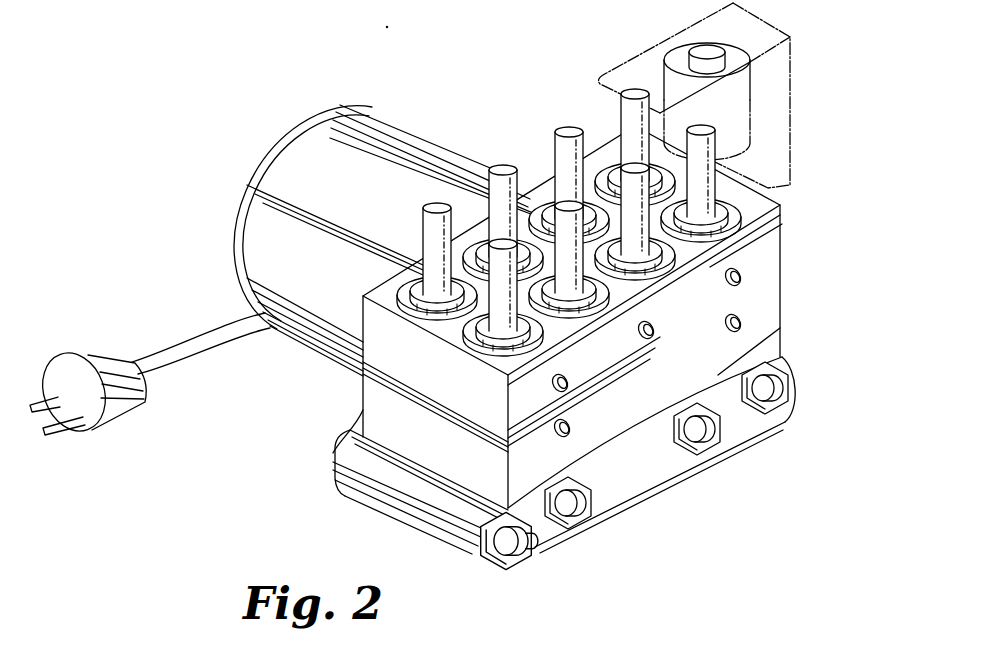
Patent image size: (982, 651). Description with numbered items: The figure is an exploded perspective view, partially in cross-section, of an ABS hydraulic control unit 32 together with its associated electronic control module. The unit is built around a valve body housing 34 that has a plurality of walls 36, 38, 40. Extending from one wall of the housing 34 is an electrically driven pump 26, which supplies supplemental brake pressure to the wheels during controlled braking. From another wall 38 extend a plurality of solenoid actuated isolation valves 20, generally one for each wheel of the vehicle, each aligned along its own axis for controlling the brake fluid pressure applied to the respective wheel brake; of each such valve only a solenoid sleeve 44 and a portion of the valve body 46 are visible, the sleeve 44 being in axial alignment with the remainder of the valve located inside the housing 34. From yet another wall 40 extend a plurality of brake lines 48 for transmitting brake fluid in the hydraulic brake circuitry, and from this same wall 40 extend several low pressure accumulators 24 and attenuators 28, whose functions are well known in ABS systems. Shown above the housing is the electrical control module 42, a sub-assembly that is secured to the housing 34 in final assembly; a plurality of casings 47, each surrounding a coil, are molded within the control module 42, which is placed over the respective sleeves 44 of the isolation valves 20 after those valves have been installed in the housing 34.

The solenoid actuated isolation valve 20 is at (552, 212).
The low pressure accumulator 24 is at (710, 440).
The electrically driven pump 26 is at (297, 322).
The attenuator 28 is at (533, 551).
The hydraulic control unit 32 is at (218, 269).
The valve body housing 34 is at (400, 428).
The wall 36 is at (387, 408).
The wall 38 is at (781, 206).
The wall 40 is at (713, 373).
The electrical control module 42 is at (774, 23).
The solenoid sleeve 44 is at (499, 167).
The valve body 46 is at (783, 236).
The casing 47 is at (745, 92).
The brake line 48 is at (736, 316).